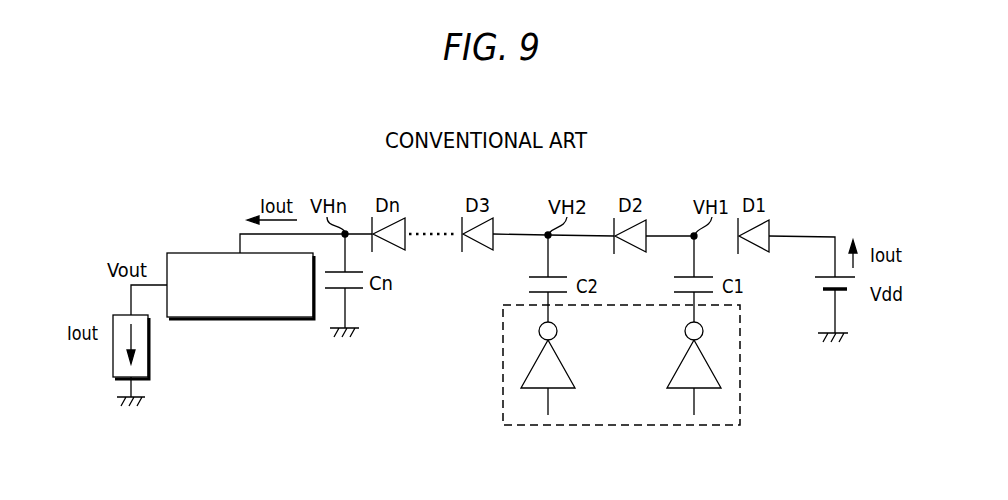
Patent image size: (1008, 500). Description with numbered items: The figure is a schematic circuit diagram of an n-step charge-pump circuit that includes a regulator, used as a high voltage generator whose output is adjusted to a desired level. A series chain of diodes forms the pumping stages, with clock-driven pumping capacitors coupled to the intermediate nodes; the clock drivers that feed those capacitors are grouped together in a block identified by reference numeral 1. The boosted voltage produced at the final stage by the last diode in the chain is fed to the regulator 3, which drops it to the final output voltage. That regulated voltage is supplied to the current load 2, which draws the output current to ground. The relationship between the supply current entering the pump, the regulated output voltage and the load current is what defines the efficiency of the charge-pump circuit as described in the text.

The clock driver circuit 1 is at (502, 367).
The current load 2 is at (149, 345).
The regulator 3 is at (190, 253).